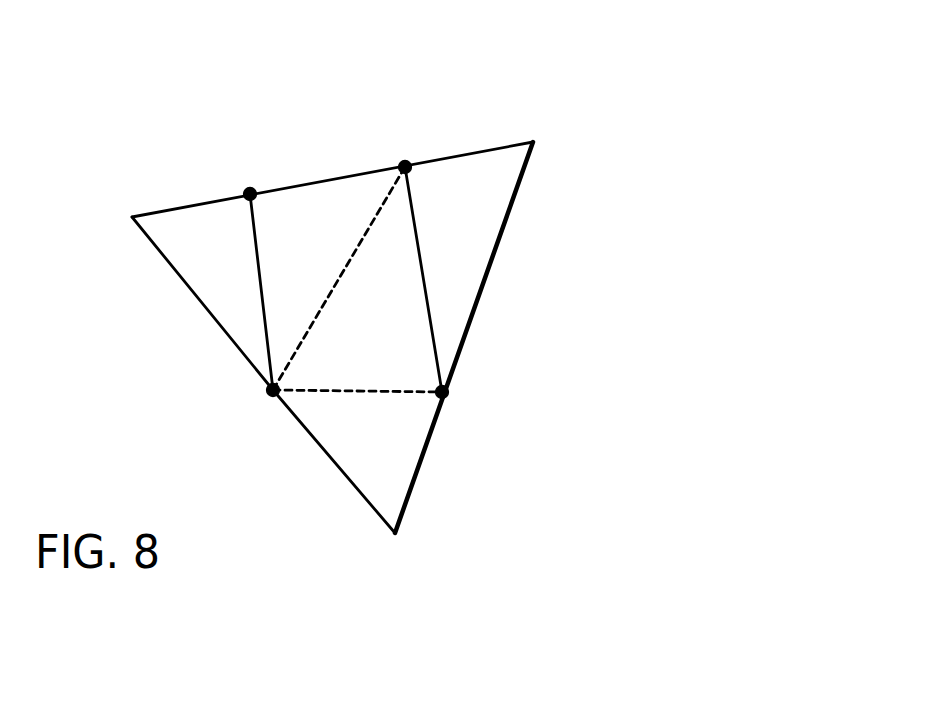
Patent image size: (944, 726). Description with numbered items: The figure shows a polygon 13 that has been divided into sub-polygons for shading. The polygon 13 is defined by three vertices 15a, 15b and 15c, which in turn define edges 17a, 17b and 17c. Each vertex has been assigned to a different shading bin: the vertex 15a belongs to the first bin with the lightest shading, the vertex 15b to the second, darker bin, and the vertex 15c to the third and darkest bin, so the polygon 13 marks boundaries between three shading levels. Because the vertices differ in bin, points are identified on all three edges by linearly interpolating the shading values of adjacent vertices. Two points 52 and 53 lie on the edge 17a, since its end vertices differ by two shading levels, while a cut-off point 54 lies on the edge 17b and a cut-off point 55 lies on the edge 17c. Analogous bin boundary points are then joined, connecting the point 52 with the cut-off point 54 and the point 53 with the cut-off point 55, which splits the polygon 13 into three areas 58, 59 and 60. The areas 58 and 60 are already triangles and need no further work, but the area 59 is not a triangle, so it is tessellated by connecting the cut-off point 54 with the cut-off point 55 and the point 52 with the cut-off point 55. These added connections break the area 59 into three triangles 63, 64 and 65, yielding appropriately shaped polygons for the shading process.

The polygon 13 is at (602, 113).
The vertex 15a is at (533, 142).
The vertex 15b is at (395, 533).
The vertex 15c is at (132, 217).
The edge 17a is at (327, 182).
The edge 17b is at (432, 428).
The edge 17c is at (183, 278).
The point 52 is at (405, 167).
The point 53 is at (250, 194).
The cut-off point 54 is at (442, 392).
The cut-off point 55 is at (273, 392).
The area 58 is at (466, 212).
The area 59 is at (318, 440).
The area 60 is at (212, 252).
The triangle 63 is at (318, 252).
The triangle 64 is at (393, 323).
The triangle 65 is at (393, 450).